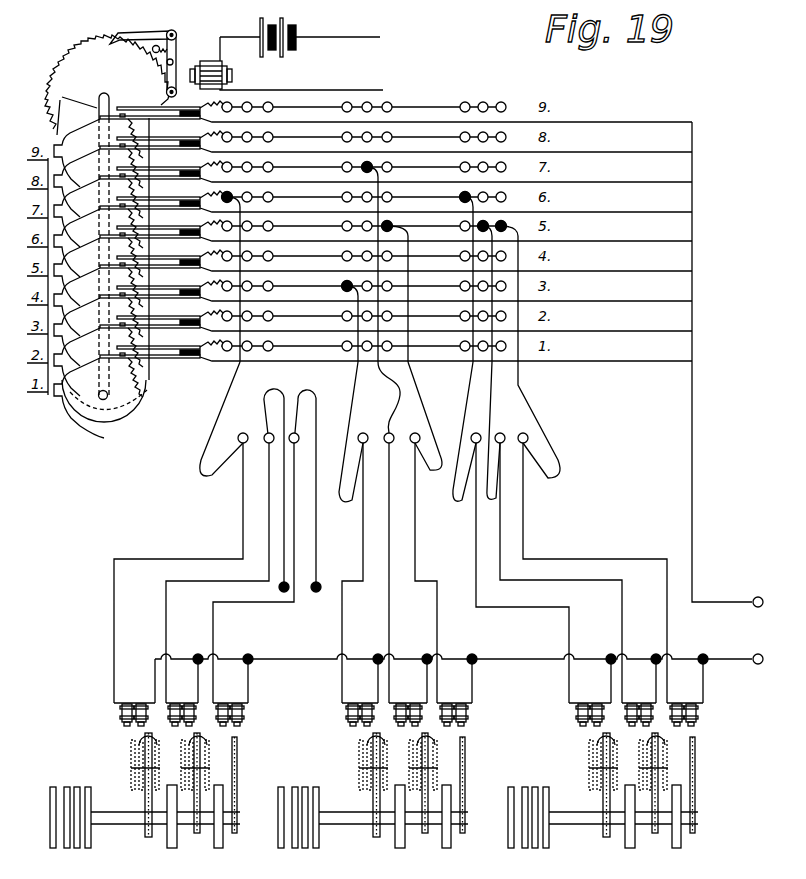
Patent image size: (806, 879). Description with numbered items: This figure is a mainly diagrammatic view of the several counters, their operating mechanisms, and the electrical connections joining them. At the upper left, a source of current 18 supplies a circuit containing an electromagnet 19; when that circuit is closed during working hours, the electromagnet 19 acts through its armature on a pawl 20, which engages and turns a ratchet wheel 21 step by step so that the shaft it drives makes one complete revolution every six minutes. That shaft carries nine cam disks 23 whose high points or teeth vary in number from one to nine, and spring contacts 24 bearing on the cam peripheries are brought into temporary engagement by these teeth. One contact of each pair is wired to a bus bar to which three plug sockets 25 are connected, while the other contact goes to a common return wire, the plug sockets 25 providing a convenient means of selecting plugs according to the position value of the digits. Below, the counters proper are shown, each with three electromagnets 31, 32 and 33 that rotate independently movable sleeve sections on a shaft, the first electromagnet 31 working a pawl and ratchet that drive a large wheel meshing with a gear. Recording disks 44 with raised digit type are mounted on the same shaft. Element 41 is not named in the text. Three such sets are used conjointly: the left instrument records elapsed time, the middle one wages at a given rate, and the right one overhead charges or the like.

The source of current 18 is at (283, 58).
The electromagnet 19 is at (206, 61).
The pawl 20 is at (108, 41).
The ratchet wheel 21 is at (62, 97).
The cam disks 23 is at (79, 418).
The spring contacts 24 is at (131, 118).
The plug sockets 25 is at (389, 102).
The electromagnet 31 is at (245, 714).
The electromagnet 32 is at (172, 702).
The electromagnet 33 is at (125, 722).
The gear disc 41 is at (218, 852).
The recording disks 44 is at (299, 831).